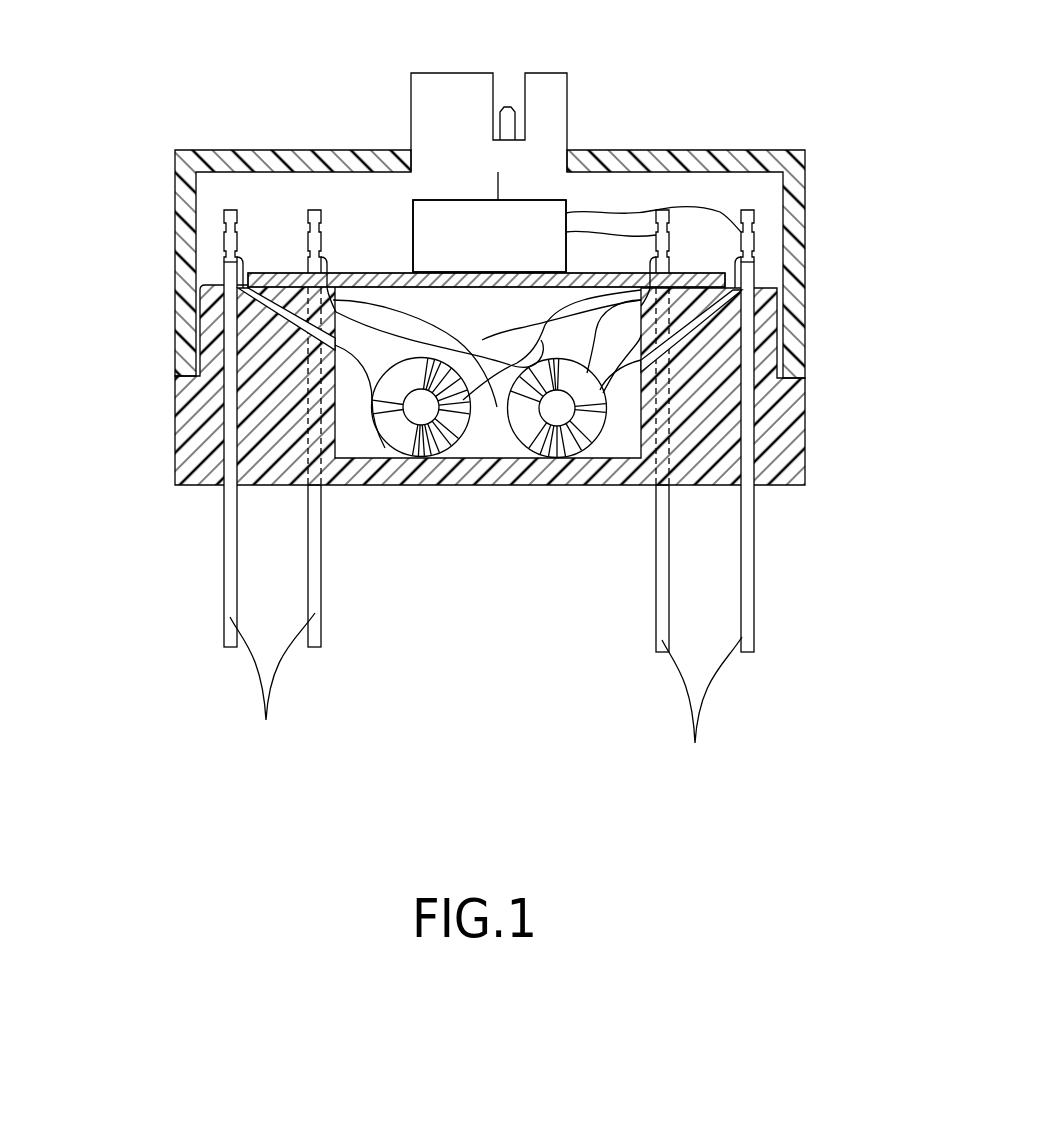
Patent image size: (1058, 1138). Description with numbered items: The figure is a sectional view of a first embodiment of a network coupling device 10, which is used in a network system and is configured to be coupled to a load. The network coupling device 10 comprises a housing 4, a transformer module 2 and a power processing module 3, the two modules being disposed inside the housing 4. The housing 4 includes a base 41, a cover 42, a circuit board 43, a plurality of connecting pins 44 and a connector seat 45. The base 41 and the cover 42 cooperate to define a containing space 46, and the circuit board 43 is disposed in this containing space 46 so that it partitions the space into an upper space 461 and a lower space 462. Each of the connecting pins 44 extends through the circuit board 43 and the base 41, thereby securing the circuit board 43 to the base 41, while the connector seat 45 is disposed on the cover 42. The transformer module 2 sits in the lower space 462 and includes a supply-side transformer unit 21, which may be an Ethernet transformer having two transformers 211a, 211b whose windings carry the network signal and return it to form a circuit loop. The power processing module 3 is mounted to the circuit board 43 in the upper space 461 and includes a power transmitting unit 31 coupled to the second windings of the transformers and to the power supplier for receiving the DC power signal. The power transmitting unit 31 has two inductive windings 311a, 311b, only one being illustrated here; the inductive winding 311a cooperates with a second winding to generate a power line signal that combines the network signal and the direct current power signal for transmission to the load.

The network coupling device 10 is at (212, 88).
The transformer module 2 is at (362, 443).
The supply-side transformer unit 21 is at (565, 575).
The transformer 211a is at (423, 447).
The transformer 211b is at (546, 445).
The power processing module 3 is at (396, 228).
The power transmitting unit 31 is at (550, 187).
The inductive winding 311a is at (543, 227).
The inductive winding 311b is at (489, 236).
The housing 4 is at (154, 226).
The base 41 is at (198, 443).
The cover 42 is at (746, 162).
The circuit board 43 is at (690, 273).
The connecting pins 44 is at (489, 495).
The connector seat 45 is at (441, 100).
The containing space 46 is at (88, 290).
The upper space 461 is at (278, 236).
The lower space 462 is at (372, 331).